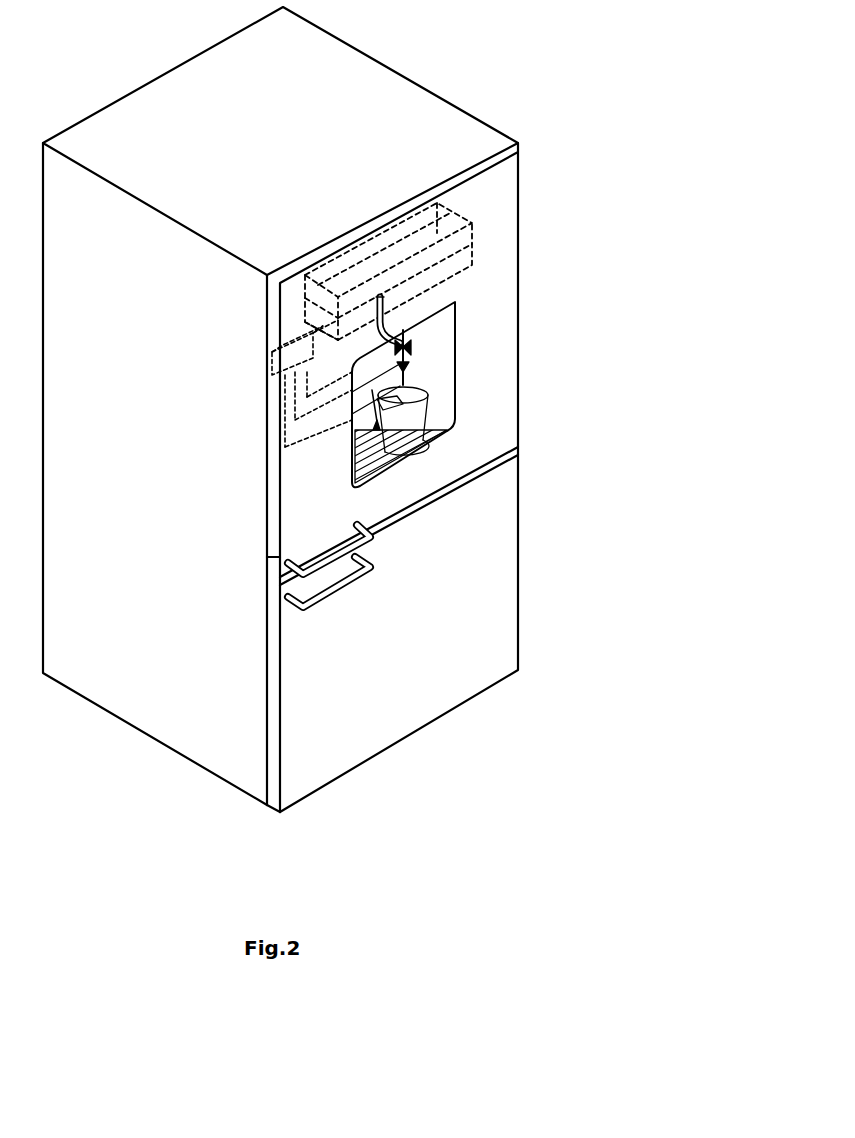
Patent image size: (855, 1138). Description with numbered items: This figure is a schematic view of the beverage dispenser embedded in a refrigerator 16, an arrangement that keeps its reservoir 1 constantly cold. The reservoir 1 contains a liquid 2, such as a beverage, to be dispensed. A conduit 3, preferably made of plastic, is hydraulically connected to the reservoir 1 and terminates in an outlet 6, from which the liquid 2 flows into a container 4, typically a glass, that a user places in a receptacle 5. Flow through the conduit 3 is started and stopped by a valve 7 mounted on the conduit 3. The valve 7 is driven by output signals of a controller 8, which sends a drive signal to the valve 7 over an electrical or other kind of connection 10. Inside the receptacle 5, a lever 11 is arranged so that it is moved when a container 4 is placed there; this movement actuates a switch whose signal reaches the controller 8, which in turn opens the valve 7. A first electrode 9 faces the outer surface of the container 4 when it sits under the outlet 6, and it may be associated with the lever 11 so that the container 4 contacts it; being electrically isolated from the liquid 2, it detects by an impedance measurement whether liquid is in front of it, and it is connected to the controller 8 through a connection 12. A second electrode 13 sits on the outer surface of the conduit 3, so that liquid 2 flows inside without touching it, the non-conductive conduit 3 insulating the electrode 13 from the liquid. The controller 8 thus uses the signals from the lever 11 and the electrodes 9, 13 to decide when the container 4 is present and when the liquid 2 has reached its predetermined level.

The reservoir 1 is at (440, 215).
The liquid 2 is at (452, 265).
The conduit 3 is at (430, 318).
The container 4 is at (413, 410).
The receptacle 5 is at (478, 390).
The outlet 6 is at (400, 378).
The valve 7 is at (420, 345).
The controller 8 is at (282, 353).
The first electrode 9 is at (353, 432).
The connection 10 is at (293, 397).
The lever 11 is at (393, 478).
The connection 12 is at (287, 452).
The second electrode 13 is at (400, 335).
The refrigerator 16 is at (404, 95).